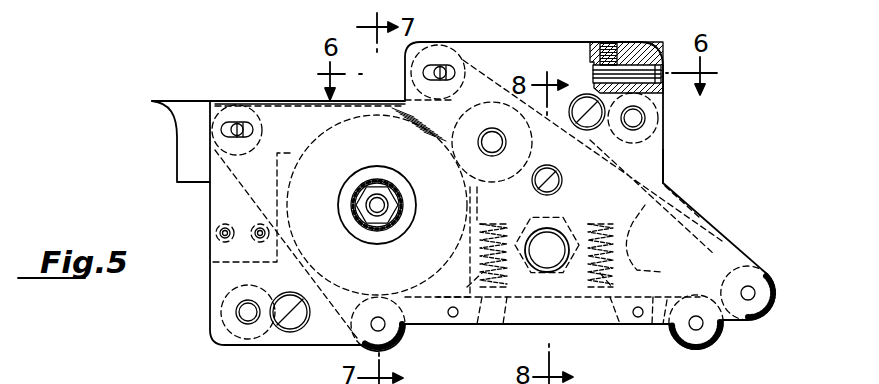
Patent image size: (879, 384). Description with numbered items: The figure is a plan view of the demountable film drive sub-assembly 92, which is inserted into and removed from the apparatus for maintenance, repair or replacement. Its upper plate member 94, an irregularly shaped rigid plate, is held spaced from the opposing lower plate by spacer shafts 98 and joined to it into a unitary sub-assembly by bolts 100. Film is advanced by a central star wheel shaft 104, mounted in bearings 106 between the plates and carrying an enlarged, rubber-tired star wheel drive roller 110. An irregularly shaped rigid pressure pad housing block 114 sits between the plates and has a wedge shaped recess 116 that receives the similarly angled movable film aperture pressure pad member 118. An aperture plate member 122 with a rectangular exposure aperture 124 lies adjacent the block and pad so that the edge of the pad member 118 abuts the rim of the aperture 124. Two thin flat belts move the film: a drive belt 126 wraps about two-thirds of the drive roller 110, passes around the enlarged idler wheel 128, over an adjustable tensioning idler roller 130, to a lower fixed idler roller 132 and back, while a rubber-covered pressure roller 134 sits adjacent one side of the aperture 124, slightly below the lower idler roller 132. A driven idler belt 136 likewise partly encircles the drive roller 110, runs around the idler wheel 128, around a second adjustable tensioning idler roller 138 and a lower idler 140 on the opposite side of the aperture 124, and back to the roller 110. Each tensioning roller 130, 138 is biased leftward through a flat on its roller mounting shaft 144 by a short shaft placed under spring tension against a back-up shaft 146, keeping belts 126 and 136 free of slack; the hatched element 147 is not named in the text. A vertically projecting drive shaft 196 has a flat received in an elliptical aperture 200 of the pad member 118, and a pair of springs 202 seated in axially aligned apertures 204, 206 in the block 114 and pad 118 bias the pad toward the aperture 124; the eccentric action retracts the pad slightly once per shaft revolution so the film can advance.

The film drive sub-assembly 92 is at (680, 158).
The upper plate member 94 is at (222, 210).
The spacer shaft 98 is at (640, 122).
The bolt 100 is at (583, 96).
The central star wheel shaft 104 is at (375, 205).
The bearing 106 is at (384, 245).
The star wheel drive roller 110 is at (347, 118).
The pressure pad housing block 114 is at (665, 186).
The wedge shaped recess 116 is at (556, 177).
The movable film aperture pressure pad member 118 is at (505, 326).
The aperture plate member 122 is at (653, 326).
The aperture 124 is at (617, 326).
The drive belt 126 is at (690, 212).
The enlarged idler wheel 128 is at (455, 147).
The adjustable tensioning idler roller 130 is at (431, 48).
The lower fixed idler roller 132 is at (776, 311).
The pressure roller 134 is at (722, 344).
The driven idler belt 136 is at (287, 100).
The adjustable tensioning idler roller 138 is at (216, 110).
The lower idler 140 is at (400, 340).
The roller mounting shaft 144 is at (447, 72).
The back-up shaft 146 is at (648, 70).
The spring 147 is at (609, 55).
The drive shaft 196 is at (558, 262).
The elliptical aperture 200 is at (547, 275).
The spring 202 is at (470, 222).
The aperture in block 204 is at (622, 243).
The aperture in pressure pad 206 is at (512, 218).